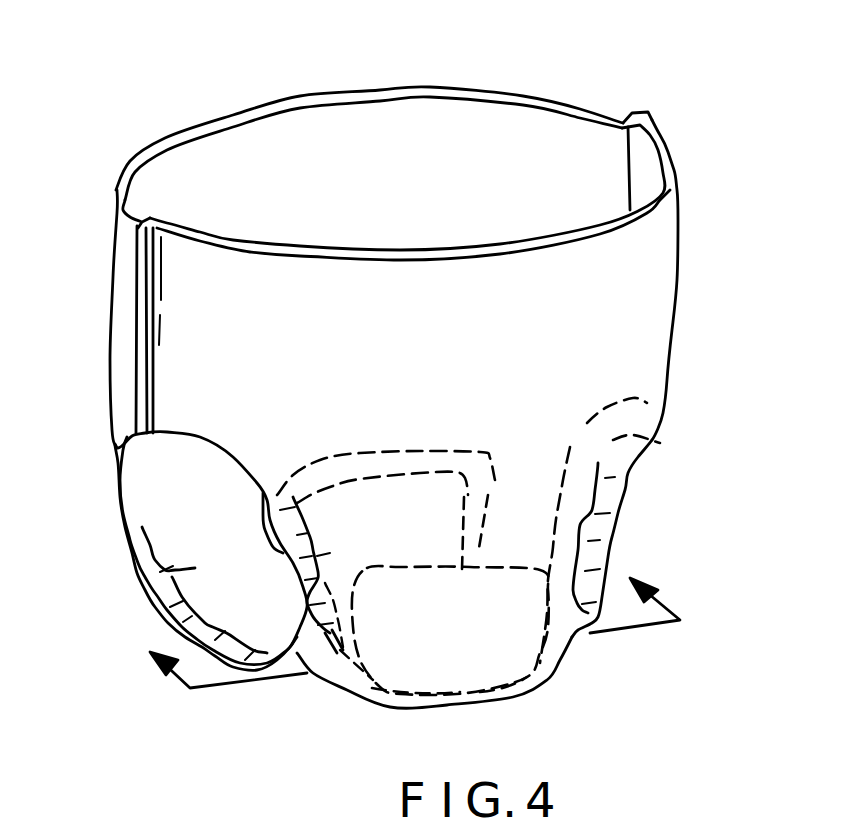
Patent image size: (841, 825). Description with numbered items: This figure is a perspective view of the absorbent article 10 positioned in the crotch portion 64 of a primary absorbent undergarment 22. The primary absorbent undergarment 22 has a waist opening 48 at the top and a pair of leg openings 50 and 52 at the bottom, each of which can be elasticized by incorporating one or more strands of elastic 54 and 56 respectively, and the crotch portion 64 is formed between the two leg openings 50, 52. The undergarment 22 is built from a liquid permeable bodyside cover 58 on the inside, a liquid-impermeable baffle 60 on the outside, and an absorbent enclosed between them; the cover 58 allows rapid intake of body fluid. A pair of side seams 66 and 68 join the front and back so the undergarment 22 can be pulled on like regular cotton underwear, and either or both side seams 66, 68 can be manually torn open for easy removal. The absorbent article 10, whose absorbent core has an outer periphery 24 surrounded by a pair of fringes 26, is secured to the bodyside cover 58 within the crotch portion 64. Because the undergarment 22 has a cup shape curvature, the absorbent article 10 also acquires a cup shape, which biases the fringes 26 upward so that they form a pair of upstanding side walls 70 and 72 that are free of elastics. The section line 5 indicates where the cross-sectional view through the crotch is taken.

The primary absorbent undergarment 22 is at (670, 74).
The waist opening 48 is at (381, 121).
The liquid permeable bodyside cover 58 is at (497, 157).
The side seam 68 is at (633, 112).
The side seam 66 is at (133, 222).
The liquid-impermeable baffle 60 is at (640, 322).
The absorbent article 10 is at (440, 430).
The fringe 26 is at (496, 490).
The upstanding side wall 72 is at (488, 573).
The leg opening 52 is at (663, 447).
The strand of elastic 56 is at (613, 522).
The strand of elastic 54 is at (127, 542).
The leg opening 50 is at (148, 583).
The outer periphery 24 is at (273, 547).
The upstanding side wall 70 is at (293, 627).
The crotch portion 64 is at (318, 677).
The section line 5- 5 is at (417, 649).